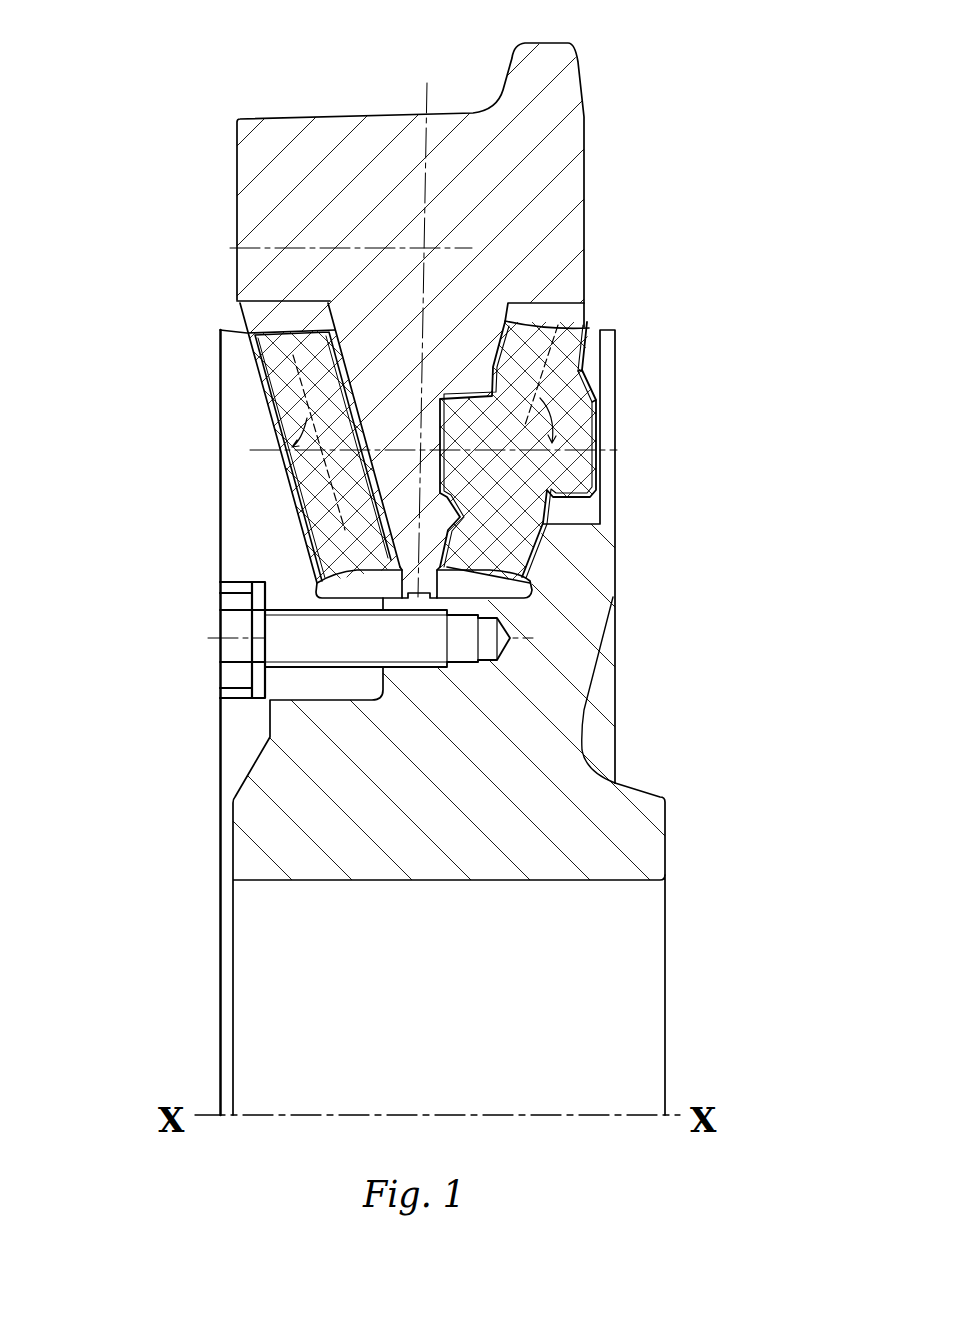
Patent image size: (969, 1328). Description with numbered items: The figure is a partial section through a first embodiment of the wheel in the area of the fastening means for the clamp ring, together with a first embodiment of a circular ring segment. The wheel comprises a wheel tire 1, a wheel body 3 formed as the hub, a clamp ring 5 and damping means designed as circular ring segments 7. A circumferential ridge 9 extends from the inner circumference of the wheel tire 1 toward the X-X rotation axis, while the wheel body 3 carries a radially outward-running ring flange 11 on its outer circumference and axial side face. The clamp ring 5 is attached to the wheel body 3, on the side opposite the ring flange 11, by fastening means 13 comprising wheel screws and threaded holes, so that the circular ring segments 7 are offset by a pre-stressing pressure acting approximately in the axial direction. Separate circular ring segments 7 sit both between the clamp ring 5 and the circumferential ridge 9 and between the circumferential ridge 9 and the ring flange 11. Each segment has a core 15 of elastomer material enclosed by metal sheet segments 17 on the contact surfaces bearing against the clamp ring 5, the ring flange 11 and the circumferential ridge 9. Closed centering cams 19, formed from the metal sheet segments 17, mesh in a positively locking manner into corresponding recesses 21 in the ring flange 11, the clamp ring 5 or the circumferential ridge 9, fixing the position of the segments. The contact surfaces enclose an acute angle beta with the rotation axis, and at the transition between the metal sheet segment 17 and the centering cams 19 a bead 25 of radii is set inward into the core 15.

The wheel tire 1 is at (331, 147).
The wheel body 3 is at (545, 815).
The clamp ring 5 is at (257, 508).
The circular ring segment 7 is at (290, 365).
The circumferential ridge 9 is at (388, 365).
The ring flange 11 is at (597, 570).
The fastening means 13 is at (297, 645).
The core 15 is at (280, 578).
The metal sheet segment 17 is at (588, 327).
The centering cam 19 is at (560, 457).
The recess 21 is at (447, 400).
The bead 25 is at (575, 343).